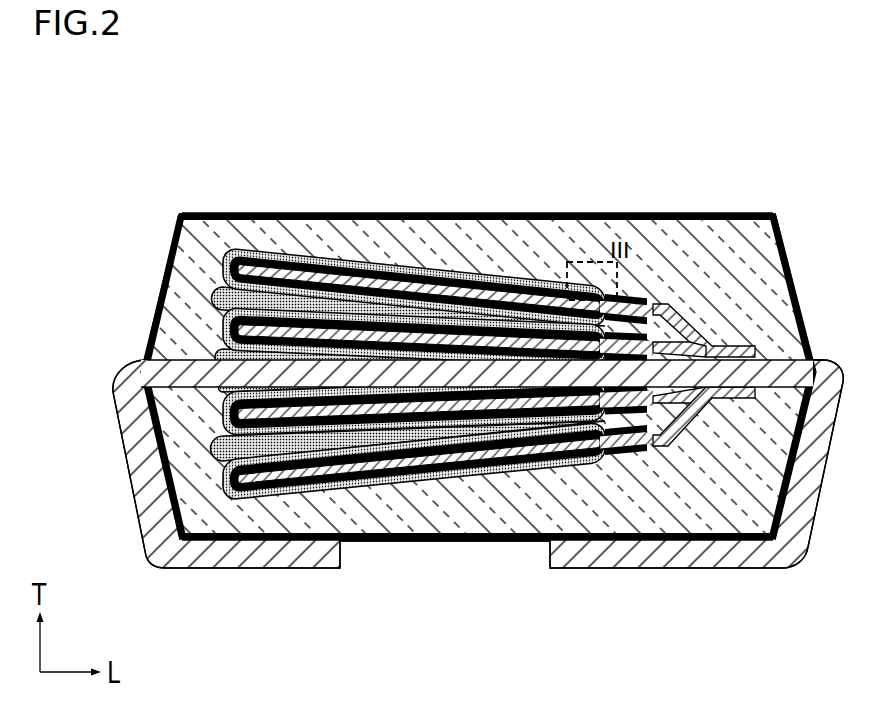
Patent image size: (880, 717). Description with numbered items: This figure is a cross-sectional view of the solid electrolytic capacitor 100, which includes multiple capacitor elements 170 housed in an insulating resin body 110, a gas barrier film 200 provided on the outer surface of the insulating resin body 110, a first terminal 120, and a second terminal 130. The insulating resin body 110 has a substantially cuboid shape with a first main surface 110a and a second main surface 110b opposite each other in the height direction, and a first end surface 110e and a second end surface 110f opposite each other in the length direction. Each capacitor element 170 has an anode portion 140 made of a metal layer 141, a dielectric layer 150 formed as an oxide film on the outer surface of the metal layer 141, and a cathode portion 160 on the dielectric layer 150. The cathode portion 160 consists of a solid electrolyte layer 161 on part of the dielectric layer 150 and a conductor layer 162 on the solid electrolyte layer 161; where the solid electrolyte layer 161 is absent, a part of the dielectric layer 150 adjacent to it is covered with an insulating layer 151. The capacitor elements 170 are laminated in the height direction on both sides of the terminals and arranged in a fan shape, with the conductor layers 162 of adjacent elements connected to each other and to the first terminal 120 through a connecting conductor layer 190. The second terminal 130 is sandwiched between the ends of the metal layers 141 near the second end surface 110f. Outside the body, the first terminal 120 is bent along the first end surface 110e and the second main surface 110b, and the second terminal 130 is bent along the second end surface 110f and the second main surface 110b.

The solid electrolytic capacitor 100 is at (86, 142).
The insulating resin body 110 is at (275, 235).
The first main surface 110a is at (350, 215).
The second main surface 110b is at (383, 542).
The first end surface 110e is at (160, 246).
The second end surface 110f is at (800, 298).
The first terminal 120 is at (165, 566).
The second terminal 130 is at (718, 556).
The anode portion 140 is at (691, 277).
The metal layer 141 is at (698, 350).
The dielectric layer 150 is at (538, 292).
The insulating layer 151 is at (628, 295).
The cathode portion 160 is at (414, 303).
The solid electrolyte layer 161 is at (482, 268).
The conductor layer 162 is at (420, 256).
The capacitor element 170 is at (503, 281).
The connecting conductor layer 190 is at (218, 296).
The gas barrier film 200 is at (458, 547).